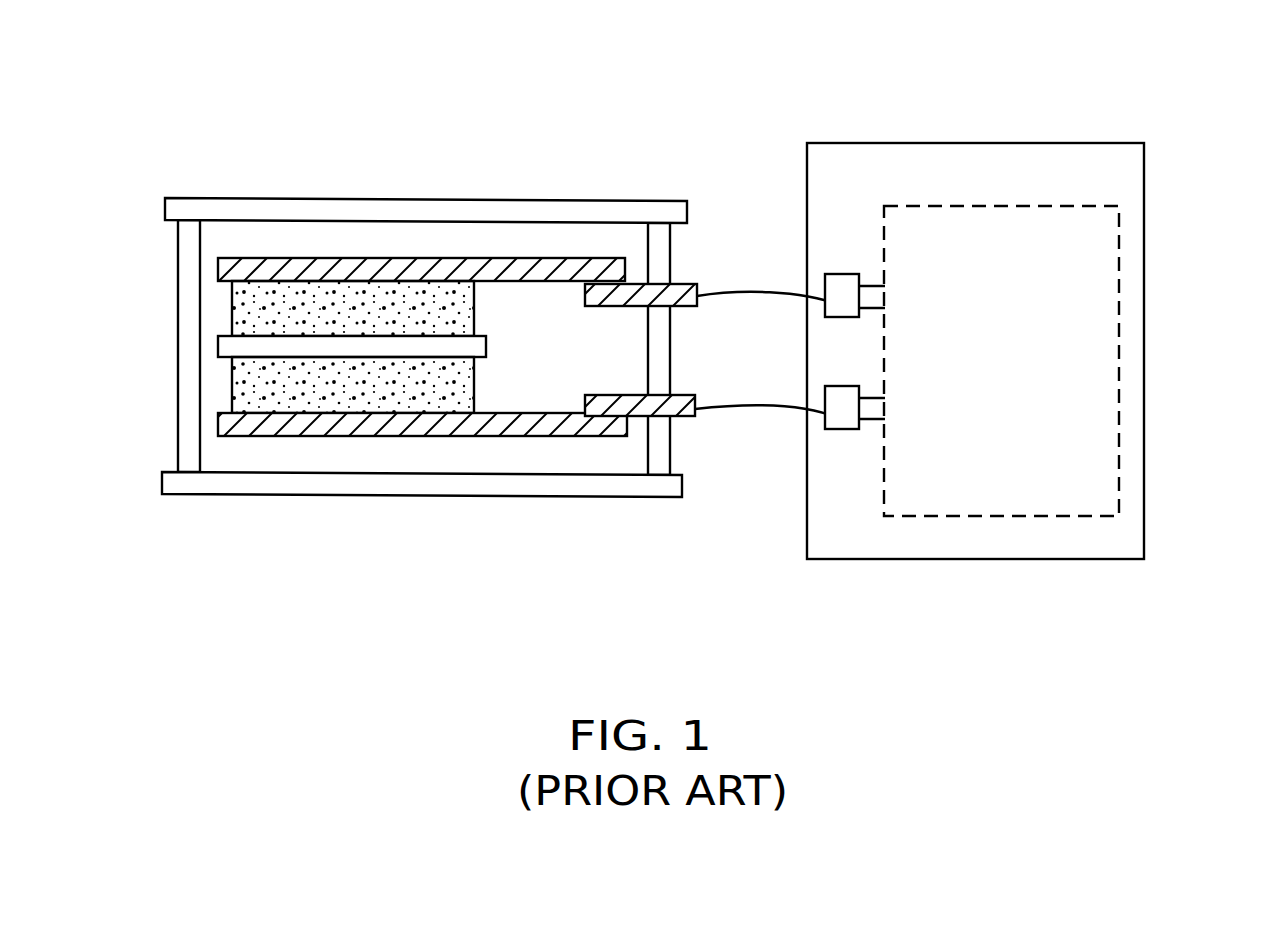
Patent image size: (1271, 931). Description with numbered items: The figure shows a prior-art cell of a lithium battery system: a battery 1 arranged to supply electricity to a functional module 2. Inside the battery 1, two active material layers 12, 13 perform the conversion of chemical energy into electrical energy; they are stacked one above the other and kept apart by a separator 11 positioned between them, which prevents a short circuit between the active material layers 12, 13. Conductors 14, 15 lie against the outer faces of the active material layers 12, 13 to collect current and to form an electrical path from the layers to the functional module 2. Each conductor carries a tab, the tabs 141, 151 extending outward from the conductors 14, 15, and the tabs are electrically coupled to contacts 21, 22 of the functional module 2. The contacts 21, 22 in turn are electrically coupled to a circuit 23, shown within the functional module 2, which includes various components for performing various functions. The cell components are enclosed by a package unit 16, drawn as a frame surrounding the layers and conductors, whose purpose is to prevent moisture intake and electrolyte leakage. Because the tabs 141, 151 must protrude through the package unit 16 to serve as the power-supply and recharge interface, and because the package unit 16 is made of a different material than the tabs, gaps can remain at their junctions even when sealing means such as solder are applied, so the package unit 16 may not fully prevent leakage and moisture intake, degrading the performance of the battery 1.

The battery 1 is at (253, 136).
The separator 11 is at (223, 342).
The active material layer 12 is at (402, 302).
The active material layer 13 is at (368, 400).
The conductor 14 is at (494, 278).
The tab 141 is at (622, 295).
The conductor 15 is at (257, 436).
The tab 151 is at (643, 408).
The package unit 16 is at (665, 248).
The functional module 2 is at (1113, 170).
The contact 21 is at (838, 277).
The contact 22 is at (852, 429).
The circuit 23 is at (1094, 415).